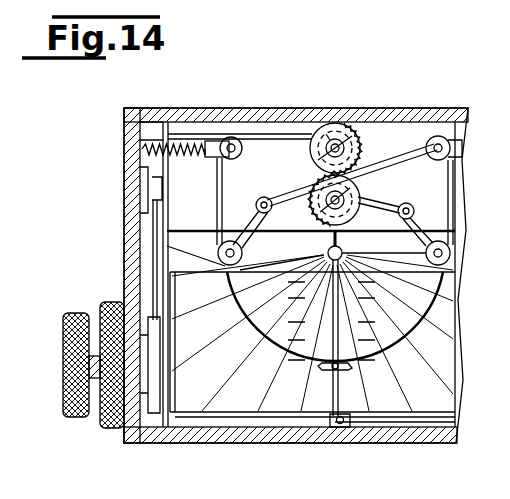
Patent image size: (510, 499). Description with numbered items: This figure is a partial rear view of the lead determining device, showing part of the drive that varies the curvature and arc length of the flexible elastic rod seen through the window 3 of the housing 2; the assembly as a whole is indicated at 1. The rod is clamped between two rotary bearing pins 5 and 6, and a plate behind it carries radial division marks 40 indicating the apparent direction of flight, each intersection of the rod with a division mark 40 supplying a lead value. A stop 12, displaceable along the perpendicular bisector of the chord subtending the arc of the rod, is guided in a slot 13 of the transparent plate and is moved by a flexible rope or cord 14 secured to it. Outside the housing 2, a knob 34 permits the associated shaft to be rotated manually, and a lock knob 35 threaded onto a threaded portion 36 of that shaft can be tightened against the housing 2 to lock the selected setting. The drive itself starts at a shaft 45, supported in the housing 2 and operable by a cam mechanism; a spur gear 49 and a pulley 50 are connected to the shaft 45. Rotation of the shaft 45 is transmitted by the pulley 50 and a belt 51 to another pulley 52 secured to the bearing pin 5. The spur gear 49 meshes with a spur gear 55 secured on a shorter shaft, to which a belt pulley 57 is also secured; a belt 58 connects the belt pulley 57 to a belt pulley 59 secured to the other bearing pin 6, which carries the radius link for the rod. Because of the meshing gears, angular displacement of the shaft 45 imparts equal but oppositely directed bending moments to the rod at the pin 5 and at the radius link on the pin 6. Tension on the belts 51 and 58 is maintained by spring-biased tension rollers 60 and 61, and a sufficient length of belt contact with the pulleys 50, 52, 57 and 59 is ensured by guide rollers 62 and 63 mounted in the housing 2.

The measuring instrument 1 is at (342, 89).
The housing 2 is at (152, 110).
The window 3 is at (282, 398).
The rotary bearing pin 5 is at (446, 250).
The rotary bearing pin 6 is at (220, 254).
The stop 12 is at (337, 372).
The slot 13 is at (345, 320).
The rope or cord 14 is at (400, 432).
The knob 34 is at (78, 314).
The lock knob 35 is at (107, 302).
The threaded portion 36 is at (97, 380).
The radial division marks 40 is at (232, 395).
The shaft 45 is at (312, 214).
The spur gear 49 is at (355, 172).
The pulley 50 is at (344, 198).
The belt 51 is at (452, 207).
The pulley 52 is at (450, 256).
The spur gear 55 is at (360, 145).
The belt pulley 57 is at (343, 140).
The belt 58 is at (287, 134).
The belt pulley 59 is at (230, 240).
The tension roller 60 is at (446, 138).
The tension roller 61 is at (233, 137).
The guide roller 62 is at (400, 220).
The guide roller 63 is at (263, 197).